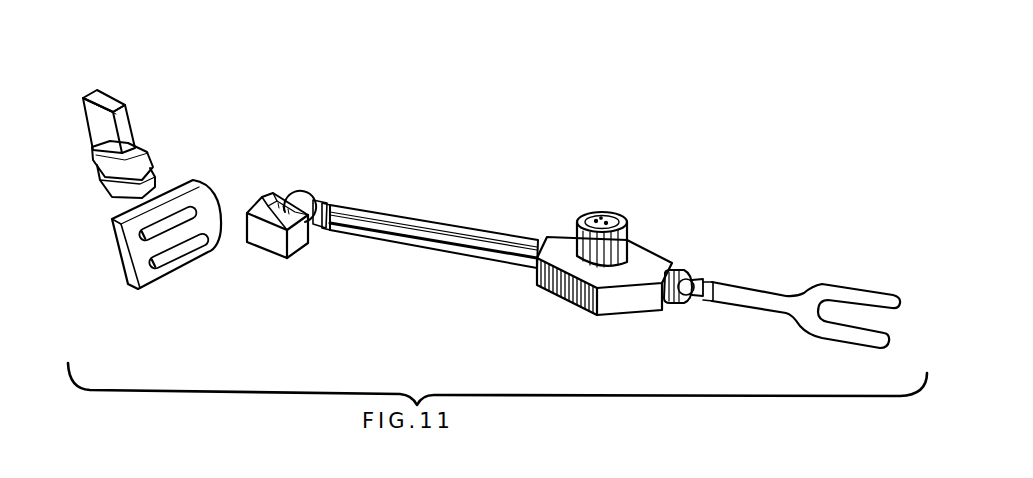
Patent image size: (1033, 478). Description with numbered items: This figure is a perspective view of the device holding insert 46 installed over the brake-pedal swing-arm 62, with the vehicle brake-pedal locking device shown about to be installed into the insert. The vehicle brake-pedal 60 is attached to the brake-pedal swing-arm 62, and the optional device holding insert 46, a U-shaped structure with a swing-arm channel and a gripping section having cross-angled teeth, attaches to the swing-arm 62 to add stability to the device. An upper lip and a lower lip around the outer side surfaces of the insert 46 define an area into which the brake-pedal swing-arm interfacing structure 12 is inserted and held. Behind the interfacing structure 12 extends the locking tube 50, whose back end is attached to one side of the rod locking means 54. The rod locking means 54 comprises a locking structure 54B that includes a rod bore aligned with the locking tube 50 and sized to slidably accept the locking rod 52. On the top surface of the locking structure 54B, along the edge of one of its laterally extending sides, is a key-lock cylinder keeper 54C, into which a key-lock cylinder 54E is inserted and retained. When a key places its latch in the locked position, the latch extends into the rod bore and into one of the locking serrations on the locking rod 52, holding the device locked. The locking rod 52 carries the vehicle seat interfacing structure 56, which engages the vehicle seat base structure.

The brake-pedal swing-arm interfacing structure 12 is at (280, 200).
The device holding insert 46 is at (150, 168).
The locking tube 50 is at (390, 210).
The locking rod 52 is at (703, 282).
The rod locking means 54 is at (672, 164).
The locking structure 54B is at (633, 267).
The key-lock cylinder keeper 54C is at (575, 222).
The key-lock cylinder 54E is at (600, 217).
The vehicle seat interfacing structure 56 is at (845, 335).
The vehicle brake-pedal 60 is at (160, 262).
The brake-pedal swing-arm 62 is at (122, 118).